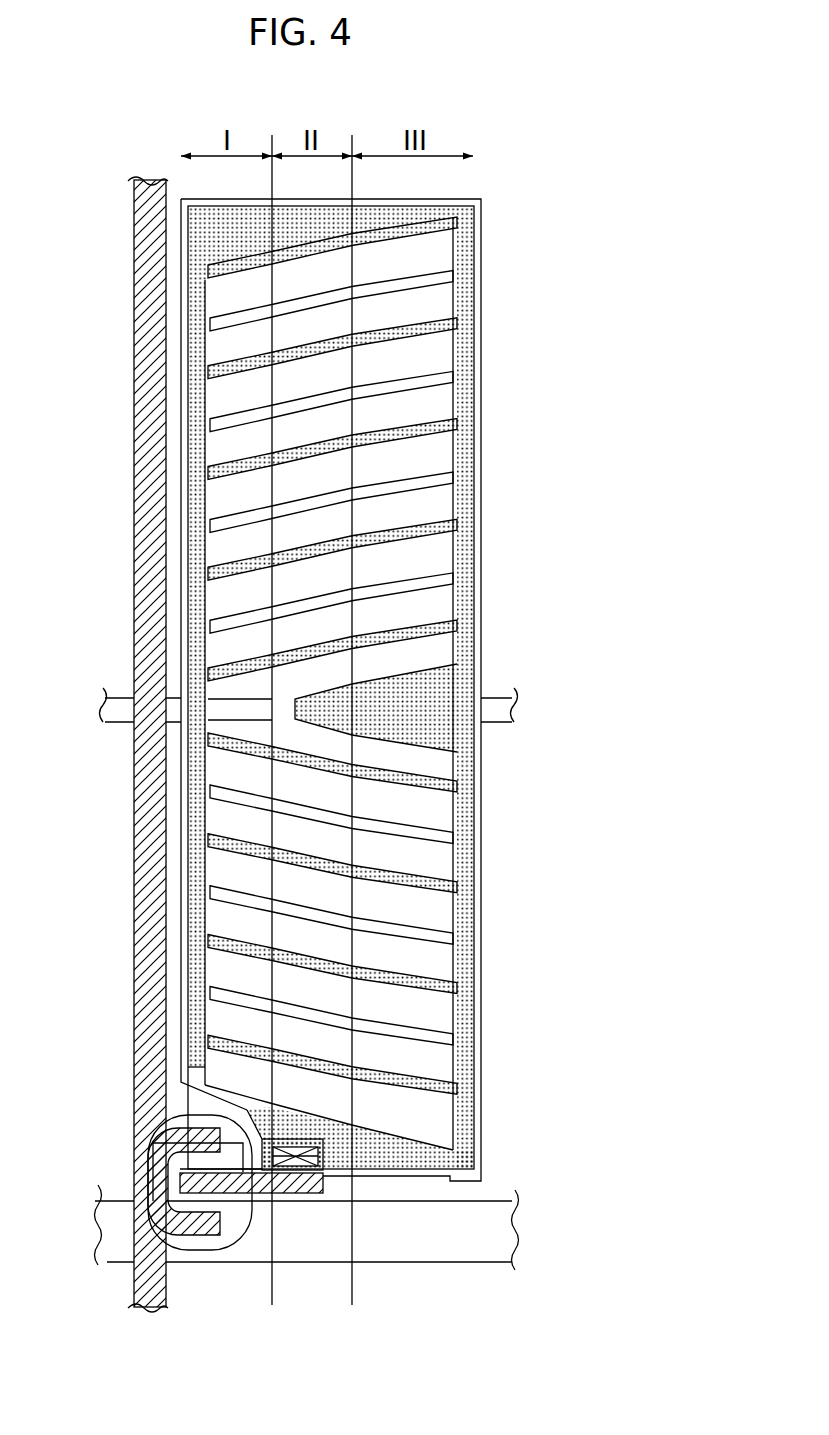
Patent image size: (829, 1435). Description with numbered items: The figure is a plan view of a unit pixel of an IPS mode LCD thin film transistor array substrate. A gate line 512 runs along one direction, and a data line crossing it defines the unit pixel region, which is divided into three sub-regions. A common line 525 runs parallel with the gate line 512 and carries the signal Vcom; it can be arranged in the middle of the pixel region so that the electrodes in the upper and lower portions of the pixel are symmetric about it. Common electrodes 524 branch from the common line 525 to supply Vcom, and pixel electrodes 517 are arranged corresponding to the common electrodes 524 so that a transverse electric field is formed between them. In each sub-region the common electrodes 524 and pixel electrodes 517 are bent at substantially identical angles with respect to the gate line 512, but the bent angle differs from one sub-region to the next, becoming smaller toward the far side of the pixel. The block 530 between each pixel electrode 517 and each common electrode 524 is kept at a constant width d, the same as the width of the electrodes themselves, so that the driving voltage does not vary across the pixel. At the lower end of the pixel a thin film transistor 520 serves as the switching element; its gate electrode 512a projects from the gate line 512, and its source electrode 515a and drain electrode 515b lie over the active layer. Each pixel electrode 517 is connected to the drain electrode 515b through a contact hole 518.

The gate line 512 is at (462, 1248).
The gate electrode 512a is at (152, 1158).
The source electrode 515a is at (190, 1236).
The drain electrode 515b is at (290, 1194).
The pixel electrode 517 is at (237, 466).
The contact hole 518 is at (325, 1171).
The thin film transistor 520 is at (222, 1242).
The common electrode 524 is at (230, 495).
The common line 525 is at (122, 699).
The block 530 is at (220, 396).